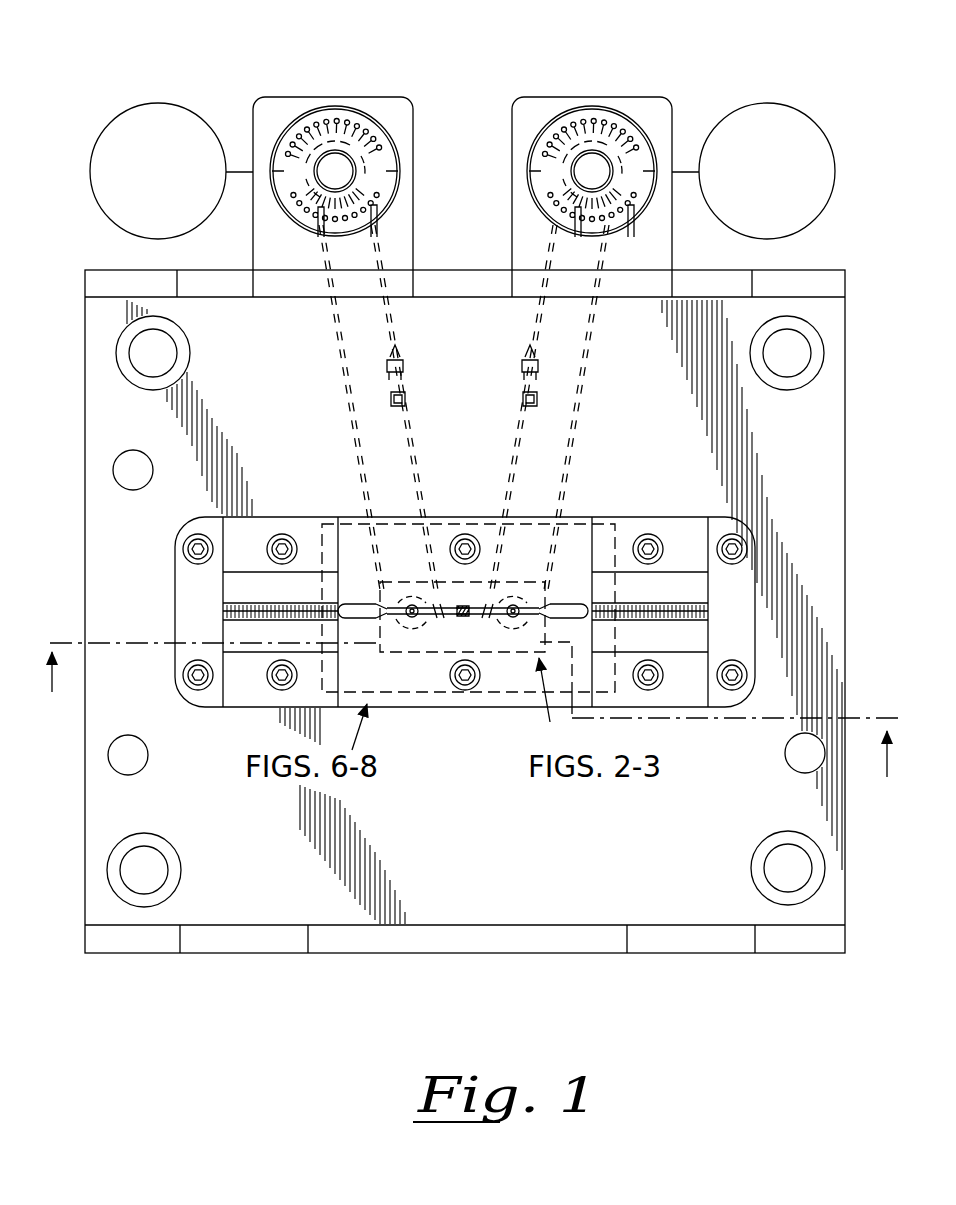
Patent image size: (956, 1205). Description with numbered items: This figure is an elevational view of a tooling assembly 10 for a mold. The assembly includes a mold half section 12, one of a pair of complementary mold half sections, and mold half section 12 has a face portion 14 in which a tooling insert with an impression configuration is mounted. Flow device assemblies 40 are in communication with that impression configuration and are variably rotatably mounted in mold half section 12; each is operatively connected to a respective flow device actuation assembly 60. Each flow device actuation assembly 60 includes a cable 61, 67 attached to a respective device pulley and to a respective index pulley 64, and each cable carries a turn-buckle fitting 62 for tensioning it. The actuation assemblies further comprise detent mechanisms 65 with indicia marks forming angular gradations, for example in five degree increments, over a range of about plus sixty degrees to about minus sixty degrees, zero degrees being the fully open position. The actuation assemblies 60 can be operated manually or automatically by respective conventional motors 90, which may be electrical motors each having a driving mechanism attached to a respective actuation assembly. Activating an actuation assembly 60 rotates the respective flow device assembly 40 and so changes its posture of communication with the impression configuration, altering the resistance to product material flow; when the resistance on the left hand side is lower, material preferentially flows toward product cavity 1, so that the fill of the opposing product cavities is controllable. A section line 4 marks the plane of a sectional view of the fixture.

The tooling assembly 10 is at (68, 206).
The mold half section 12 is at (82, 387).
The face portion 14 is at (105, 545).
The motor 90 is at (176, 104).
The flow device actuation assembly 60 is at (506, 158).
The detent mechanism 65 is at (597, 120).
The index pulley 64 is at (612, 168).
The cable 67 is at (342, 367).
The cable 61 is at (590, 366).
The turn-buckle fitting 62 is at (522, 398).
The product cavity 1 is at (242, 603).
The flow device assembly 40 is at (512, 626).
The section line 4- 4 is at (471, 726).